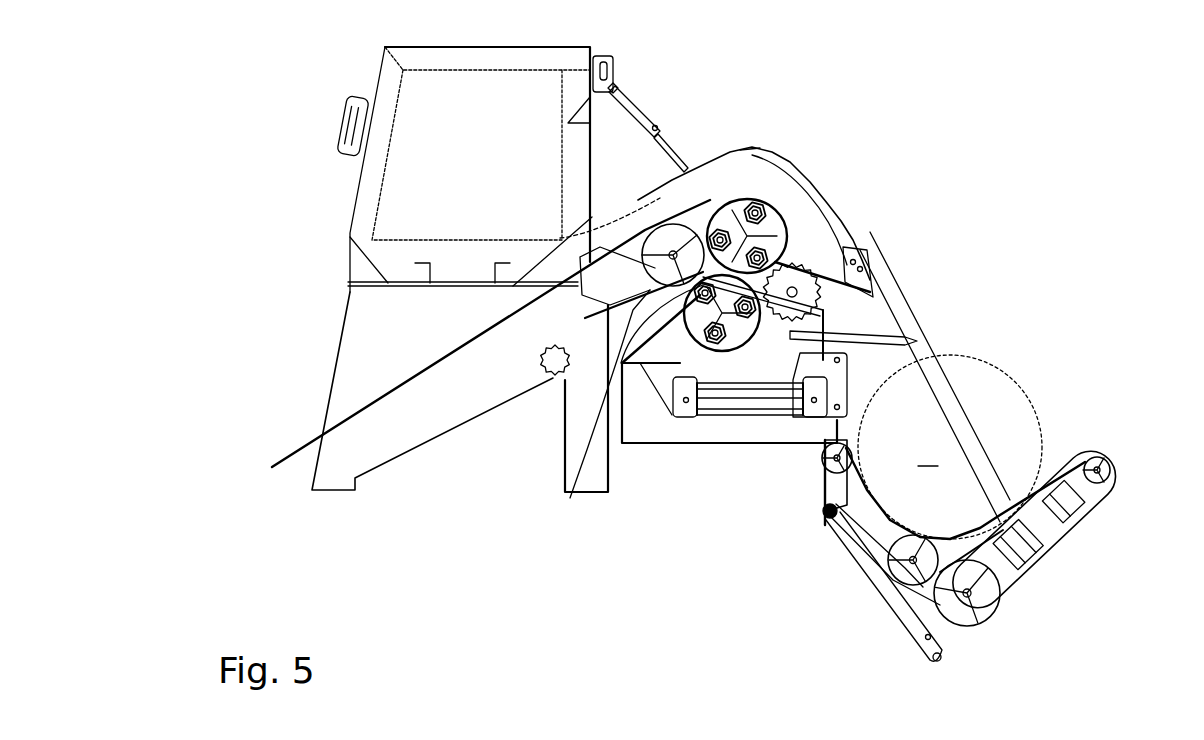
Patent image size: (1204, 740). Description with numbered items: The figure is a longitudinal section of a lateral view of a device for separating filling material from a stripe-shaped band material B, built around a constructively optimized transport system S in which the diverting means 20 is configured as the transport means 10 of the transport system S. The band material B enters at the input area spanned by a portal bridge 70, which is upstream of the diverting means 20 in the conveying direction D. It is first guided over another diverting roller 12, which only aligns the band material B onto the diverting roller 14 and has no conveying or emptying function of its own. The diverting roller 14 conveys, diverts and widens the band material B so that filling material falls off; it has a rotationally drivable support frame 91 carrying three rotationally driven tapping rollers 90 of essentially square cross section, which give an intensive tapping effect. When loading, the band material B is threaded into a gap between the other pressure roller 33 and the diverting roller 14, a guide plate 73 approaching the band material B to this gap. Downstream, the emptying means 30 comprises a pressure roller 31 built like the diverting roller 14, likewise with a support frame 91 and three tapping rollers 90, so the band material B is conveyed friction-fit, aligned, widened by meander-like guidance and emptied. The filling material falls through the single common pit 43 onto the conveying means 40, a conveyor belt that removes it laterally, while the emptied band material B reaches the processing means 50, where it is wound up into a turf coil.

The transport means 10 is at (703, 206).
The diverting roller 12 is at (650, 225).
The diverting roller 14 is at (790, 240).
The diverting means 20 is at (769, 195).
The emptying means 30 is at (918, 341).
The pressure roller 31 is at (570, 498).
The other pressure roller 33 is at (787, 331).
The conveying means 40 is at (717, 405).
The pit 43 is at (758, 367).
The processing means 50 is at (1087, 543).
The portal bridge 70 is at (331, 105).
The guide plate 73 is at (750, 150).
The tapping rollers 90 is at (735, 200).
The support frame 91 is at (745, 205).
The transport system S is at (588, 277).
The conveying direction D is at (453, 325).
The band material B is at (460, 348).